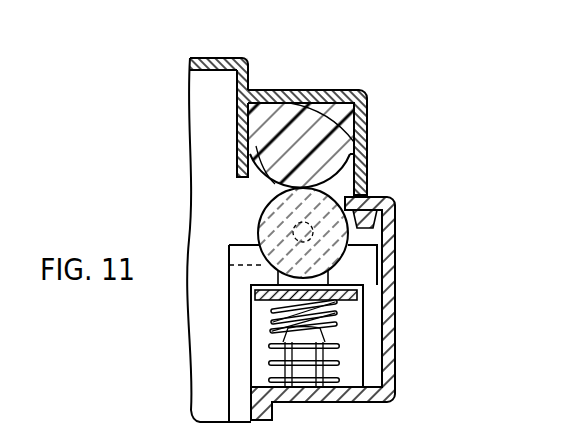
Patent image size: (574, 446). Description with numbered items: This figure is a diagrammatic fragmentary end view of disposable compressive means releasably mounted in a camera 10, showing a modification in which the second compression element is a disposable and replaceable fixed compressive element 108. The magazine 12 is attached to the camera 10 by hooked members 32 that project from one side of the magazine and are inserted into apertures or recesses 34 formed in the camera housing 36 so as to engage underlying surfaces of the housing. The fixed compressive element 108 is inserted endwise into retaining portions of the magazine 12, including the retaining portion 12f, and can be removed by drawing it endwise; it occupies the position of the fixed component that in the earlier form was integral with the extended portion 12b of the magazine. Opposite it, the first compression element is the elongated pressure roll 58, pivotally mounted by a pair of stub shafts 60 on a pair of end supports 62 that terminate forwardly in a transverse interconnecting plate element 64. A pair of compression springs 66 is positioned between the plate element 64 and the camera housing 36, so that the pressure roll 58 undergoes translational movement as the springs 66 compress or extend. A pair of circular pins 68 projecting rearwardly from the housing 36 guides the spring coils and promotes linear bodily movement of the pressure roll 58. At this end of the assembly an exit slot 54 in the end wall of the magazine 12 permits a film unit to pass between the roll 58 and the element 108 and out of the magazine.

The camera 10 is at (293, 92).
The magazine 12 is at (200, 55).
The retaining portion of the magazine 12f is at (237, 128).
The extended portion of the magazine 12b is at (368, 157).
The hooked members 32 is at (378, 213).
The apertures or recesses 34 is at (343, 226).
The camera housing 36 is at (396, 319).
The exit slot 54 is at (372, 193).
The pressure roll 58 is at (268, 189).
The stub shafts 60 is at (258, 221).
The end supports 62 is at (262, 257).
The plate element 64 is at (255, 294).
The compression springs 66 is at (275, 329).
The circular pins 68 is at (271, 366).
The fixed compressive element 108 is at (259, 178).